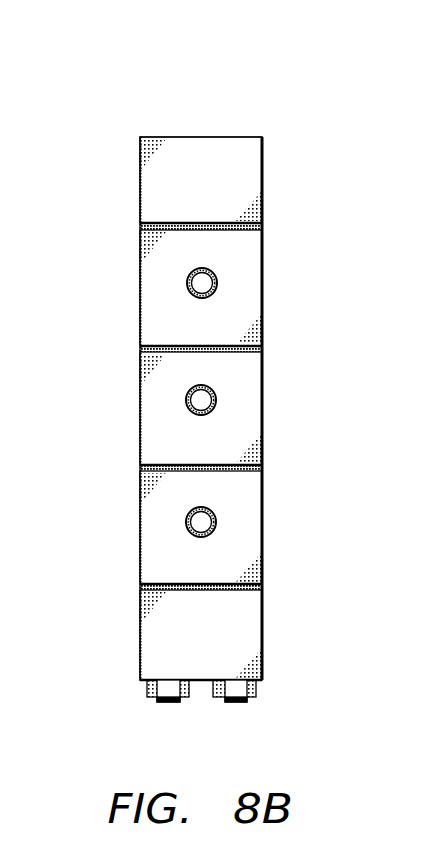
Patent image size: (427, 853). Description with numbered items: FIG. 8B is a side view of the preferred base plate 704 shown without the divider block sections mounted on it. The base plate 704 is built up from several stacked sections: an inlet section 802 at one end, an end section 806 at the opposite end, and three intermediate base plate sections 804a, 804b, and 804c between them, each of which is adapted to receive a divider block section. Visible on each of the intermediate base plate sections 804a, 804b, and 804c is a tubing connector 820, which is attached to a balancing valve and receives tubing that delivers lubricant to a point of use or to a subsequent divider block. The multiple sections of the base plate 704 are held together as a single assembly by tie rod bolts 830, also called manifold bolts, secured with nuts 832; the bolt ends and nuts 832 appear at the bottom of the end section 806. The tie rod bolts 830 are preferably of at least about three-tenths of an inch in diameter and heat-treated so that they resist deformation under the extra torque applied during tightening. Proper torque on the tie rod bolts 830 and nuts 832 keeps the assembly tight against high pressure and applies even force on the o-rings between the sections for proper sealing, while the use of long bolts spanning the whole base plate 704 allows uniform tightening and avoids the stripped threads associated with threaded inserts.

The base plate 704 is at (103, 52).
The inlet section 802 is at (263, 178).
The first intermediate base plate section 804a is at (263, 290).
The second intermediate base plate section 804b is at (263, 403).
The third intermediate base plate section 804c is at (263, 521).
The end section 806 is at (263, 638).
The tubing connector 820 is at (186, 288).
The tie rod bolt 830 is at (165, 703).
The nut 832 is at (145, 685).